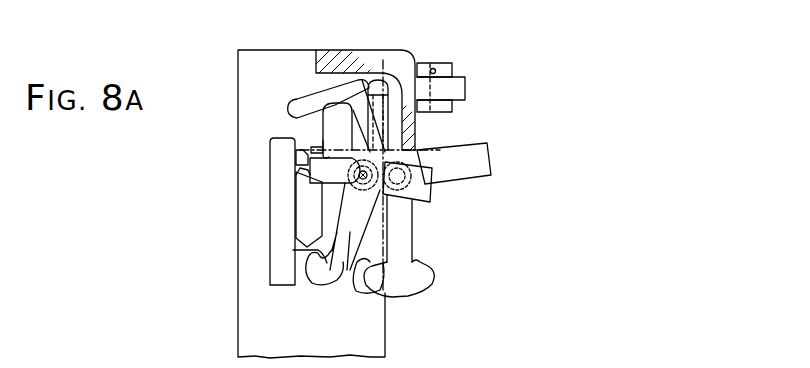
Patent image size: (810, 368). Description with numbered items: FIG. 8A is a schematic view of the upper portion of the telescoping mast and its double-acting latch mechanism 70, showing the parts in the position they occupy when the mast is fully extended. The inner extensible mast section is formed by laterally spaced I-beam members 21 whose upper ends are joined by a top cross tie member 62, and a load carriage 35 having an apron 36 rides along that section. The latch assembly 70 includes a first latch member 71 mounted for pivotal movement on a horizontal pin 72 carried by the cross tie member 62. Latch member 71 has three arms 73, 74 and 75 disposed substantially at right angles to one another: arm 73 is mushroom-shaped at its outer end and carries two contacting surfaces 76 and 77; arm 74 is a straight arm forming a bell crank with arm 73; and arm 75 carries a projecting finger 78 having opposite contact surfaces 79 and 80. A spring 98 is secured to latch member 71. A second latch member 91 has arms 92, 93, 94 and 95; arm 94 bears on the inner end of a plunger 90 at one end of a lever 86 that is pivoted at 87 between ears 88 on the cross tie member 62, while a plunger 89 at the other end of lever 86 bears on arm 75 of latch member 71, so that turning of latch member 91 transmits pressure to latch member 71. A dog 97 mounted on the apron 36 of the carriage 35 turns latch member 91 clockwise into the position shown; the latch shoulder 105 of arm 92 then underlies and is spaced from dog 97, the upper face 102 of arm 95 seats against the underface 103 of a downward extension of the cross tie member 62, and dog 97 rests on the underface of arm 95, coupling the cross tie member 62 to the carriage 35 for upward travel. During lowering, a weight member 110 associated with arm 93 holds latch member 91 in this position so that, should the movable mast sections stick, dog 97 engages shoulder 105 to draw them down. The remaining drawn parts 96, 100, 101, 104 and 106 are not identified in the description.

The I-beam members 21 is at (238, 92).
The load carriage 35 is at (259, 298).
The apron 36 is at (277, 258).
The top cross tie member 62 is at (363, 46).
The latch mechanism 70 is at (418, 298).
The first latch member 71 is at (398, 247).
The pin 72 is at (427, 148).
The arm 73 is at (400, 236).
The arm 74 is at (480, 160).
The arm 75 is at (356, 114).
The contacting surface 76 is at (440, 262).
The contacting surface 77 is at (364, 285).
The finger portion 78 is at (316, 98).
The contact surface 79 is at (297, 117).
The contact surface 80 is at (352, 49).
The lever 86 is at (458, 90).
The pivot 87 is at (437, 70).
The ears 88 is at (452, 68).
The plunger 89 is at (388, 48).
The plunger 90 is at (417, 64).
The latch member 91 is at (303, 288).
The arm 92 is at (326, 283).
The arm 93 is at (424, 194).
The arm 94 is at (416, 126).
The arm 95 is at (330, 160).
The link 96 is at (363, 198).
The dog 97 is at (286, 222).
The spring 98 is at (313, 143).
The latch block 100 is at (296, 197).
The latch nose 101 is at (296, 177).
The upper face 102 is at (296, 160).
The underface 103 is at (311, 150).
The corner 104 is at (316, 49).
The latch shoulder 105 is at (310, 251).
The spring end 106 is at (277, 254).
The weight member 110 is at (420, 204).